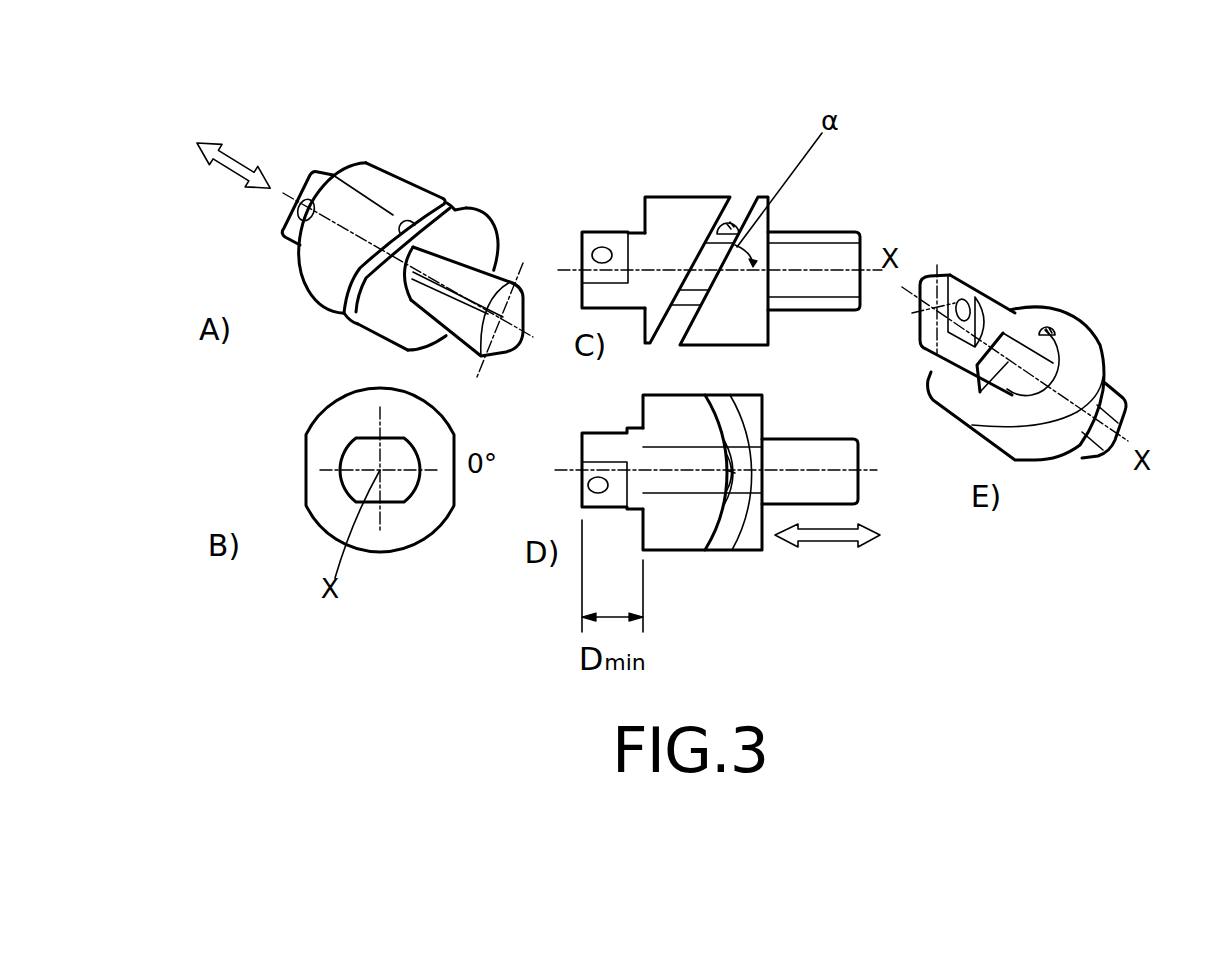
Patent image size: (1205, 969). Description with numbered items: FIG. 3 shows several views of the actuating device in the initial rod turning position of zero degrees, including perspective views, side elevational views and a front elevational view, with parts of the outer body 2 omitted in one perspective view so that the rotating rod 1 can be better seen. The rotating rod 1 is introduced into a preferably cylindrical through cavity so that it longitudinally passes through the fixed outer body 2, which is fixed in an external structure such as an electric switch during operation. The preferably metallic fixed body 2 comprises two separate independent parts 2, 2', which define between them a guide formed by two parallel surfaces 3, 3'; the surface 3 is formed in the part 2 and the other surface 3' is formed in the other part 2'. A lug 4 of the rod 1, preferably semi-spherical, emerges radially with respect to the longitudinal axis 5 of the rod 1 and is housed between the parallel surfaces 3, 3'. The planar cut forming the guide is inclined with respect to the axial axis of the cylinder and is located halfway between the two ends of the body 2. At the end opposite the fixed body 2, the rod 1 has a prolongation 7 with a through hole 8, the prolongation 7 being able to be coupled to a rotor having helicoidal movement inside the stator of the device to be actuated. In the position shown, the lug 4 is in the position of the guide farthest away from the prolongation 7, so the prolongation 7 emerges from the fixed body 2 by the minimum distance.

The rotating rod 1 is at (467, 273).
The fixed outer body 2 is at (530, 348).
The second part of the fixed body 2' is at (717, 348).
The guiding surface 3 is at (591, 257).
The guiding surface 3' is at (730, 446).
The lug 4 is at (409, 226).
The longitudinal axis 5 is at (1122, 443).
The prolongation 7 is at (313, 180).
The through hole 8 is at (596, 258).